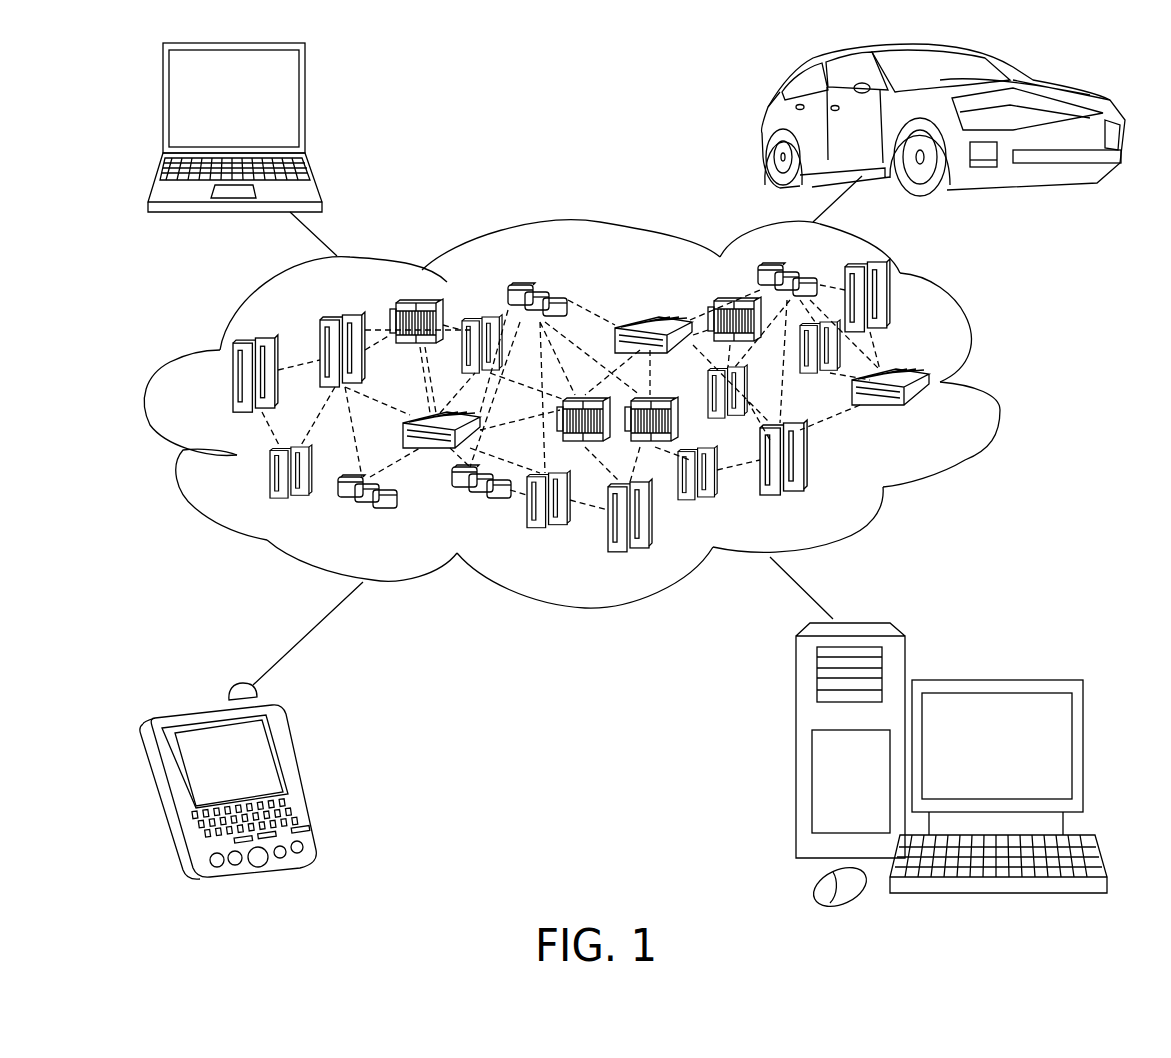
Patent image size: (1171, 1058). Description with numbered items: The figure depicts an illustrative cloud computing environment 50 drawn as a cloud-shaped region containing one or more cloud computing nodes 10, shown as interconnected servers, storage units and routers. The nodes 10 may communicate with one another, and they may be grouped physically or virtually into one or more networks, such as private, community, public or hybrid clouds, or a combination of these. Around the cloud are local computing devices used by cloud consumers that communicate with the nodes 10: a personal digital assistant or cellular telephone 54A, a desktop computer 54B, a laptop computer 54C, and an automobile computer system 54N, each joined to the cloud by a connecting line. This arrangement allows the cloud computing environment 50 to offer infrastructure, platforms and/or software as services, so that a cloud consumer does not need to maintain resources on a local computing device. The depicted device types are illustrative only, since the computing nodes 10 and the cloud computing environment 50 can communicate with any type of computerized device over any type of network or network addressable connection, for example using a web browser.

The cloud computing node 10 is at (935, 418).
The cloud computing environment 50 is at (998, 390).
The personal digital assistant or cellular telephone 54A is at (300, 773).
The desktop computer 54B is at (997, 680).
The laptop computer 54C is at (305, 105).
The automobile computer system 54N is at (765, 122).